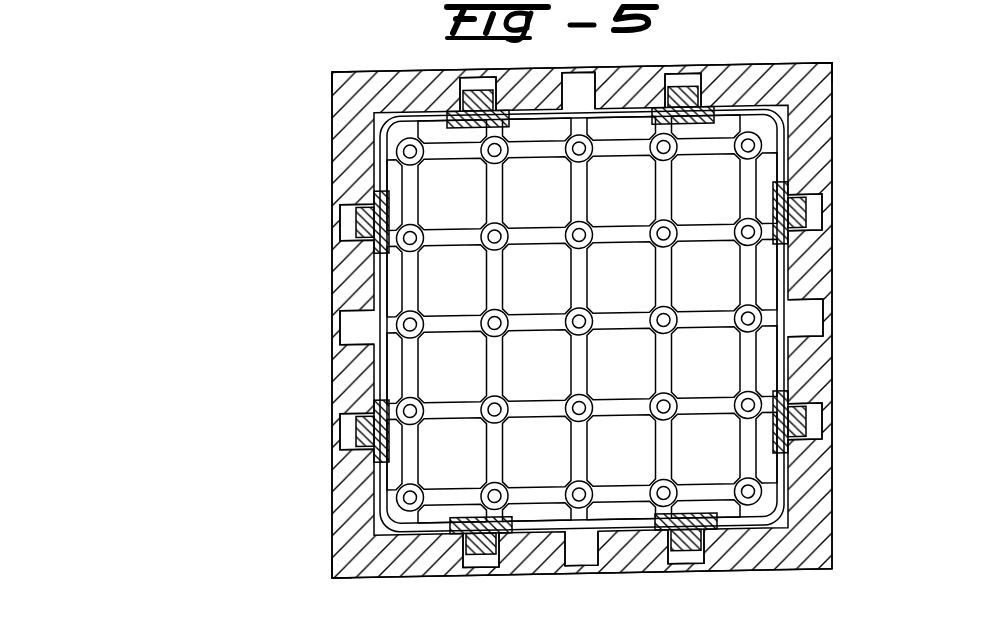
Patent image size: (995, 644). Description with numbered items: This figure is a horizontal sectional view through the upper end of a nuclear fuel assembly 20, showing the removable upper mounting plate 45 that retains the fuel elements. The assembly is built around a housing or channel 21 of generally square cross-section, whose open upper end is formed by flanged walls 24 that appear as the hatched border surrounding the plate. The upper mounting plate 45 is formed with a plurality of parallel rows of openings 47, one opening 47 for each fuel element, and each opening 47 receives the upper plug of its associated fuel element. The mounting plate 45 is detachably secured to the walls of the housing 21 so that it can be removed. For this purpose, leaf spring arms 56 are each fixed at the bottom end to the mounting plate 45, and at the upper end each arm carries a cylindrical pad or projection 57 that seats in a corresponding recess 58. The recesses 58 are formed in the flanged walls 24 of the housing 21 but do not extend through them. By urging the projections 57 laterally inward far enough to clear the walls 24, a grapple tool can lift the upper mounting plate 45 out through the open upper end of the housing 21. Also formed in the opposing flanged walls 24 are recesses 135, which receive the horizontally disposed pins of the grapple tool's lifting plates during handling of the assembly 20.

The nuclear fuel assembly 20 is at (330, 140).
The housing or channel 21 is at (832, 534).
The flanged walls 24 is at (826, 77).
The upper mounting plate 45 is at (576, 287).
The openings 47 is at (490, 247).
The leaf spring arms 56 is at (468, 132).
The cylindrical pad or projection 57 is at (479, 97).
The recesses 58 is at (498, 88).
The recesses 135 is at (580, 84).